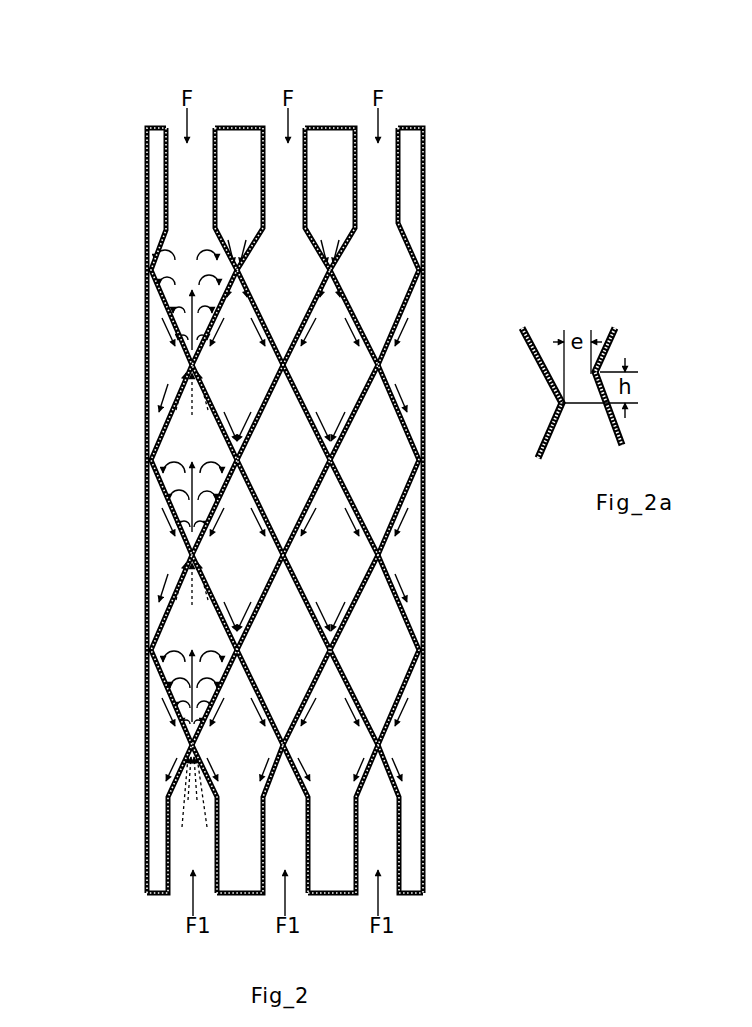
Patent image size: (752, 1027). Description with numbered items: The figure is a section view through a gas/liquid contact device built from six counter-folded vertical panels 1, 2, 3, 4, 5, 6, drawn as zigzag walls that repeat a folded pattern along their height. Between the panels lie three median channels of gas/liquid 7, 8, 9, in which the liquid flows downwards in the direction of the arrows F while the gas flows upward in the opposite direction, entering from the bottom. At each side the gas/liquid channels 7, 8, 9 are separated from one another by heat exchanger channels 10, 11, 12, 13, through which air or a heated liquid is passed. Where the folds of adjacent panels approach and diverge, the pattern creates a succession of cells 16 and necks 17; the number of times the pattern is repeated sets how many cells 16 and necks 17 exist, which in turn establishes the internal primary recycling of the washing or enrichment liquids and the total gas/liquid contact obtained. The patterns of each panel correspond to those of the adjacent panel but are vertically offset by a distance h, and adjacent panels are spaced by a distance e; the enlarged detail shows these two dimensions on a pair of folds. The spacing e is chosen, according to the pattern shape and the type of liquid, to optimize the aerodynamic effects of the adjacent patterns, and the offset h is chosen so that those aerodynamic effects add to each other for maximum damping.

The counter-folded vertical panel 1 is at (167, 155).
The counter-folded vertical panel 2 is at (210, 137).
The counter-folded vertical panel 3 is at (263, 137).
The counter-folded vertical panel 4 is at (312, 137).
The counter-folded vertical panel 5 is at (358, 137).
The counter-folded vertical panel 6 is at (400, 148).
The median channel of gas/liquid 7 is at (192, 225).
The median channel of gas/liquid 8 is at (330, 225).
The median channel of gas/liquid 9 is at (380, 220).
The heat exchanger channel 10 is at (158, 182).
The heat exchanger channel 11 is at (239, 163).
The heat exchanger channel 12 is at (288, 227).
The heat exchanger channel 13 is at (413, 175).
The cell 16 is at (285, 535).
The neck 17 is at (233, 470).